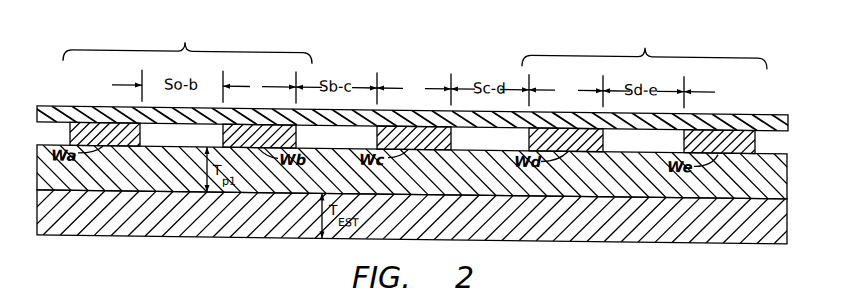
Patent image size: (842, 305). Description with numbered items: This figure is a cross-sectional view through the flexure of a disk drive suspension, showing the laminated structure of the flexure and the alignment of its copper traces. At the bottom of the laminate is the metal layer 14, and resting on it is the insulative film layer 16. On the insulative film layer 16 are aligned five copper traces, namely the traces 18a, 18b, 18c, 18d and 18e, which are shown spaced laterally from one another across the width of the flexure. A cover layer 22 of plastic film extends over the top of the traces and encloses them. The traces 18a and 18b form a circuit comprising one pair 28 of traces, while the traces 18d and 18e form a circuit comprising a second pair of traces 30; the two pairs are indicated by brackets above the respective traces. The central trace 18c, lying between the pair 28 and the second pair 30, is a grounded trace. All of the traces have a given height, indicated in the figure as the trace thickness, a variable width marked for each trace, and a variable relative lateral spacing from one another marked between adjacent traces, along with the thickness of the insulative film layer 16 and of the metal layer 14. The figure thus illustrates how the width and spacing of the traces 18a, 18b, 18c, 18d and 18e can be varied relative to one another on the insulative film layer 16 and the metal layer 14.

The metal layer 14 is at (128, 234).
The insulative film layer 16 is at (787, 178).
The trace 18a is at (70, 131).
The trace 18b is at (223, 132).
The trace 18c is at (377, 133).
The trace 18d is at (529, 133).
The trace 18e is at (684, 133).
The cover layer 22 is at (770, 106).
The pair of traces 28 is at (187, 42).
The second pair of traces 30 is at (644, 47).